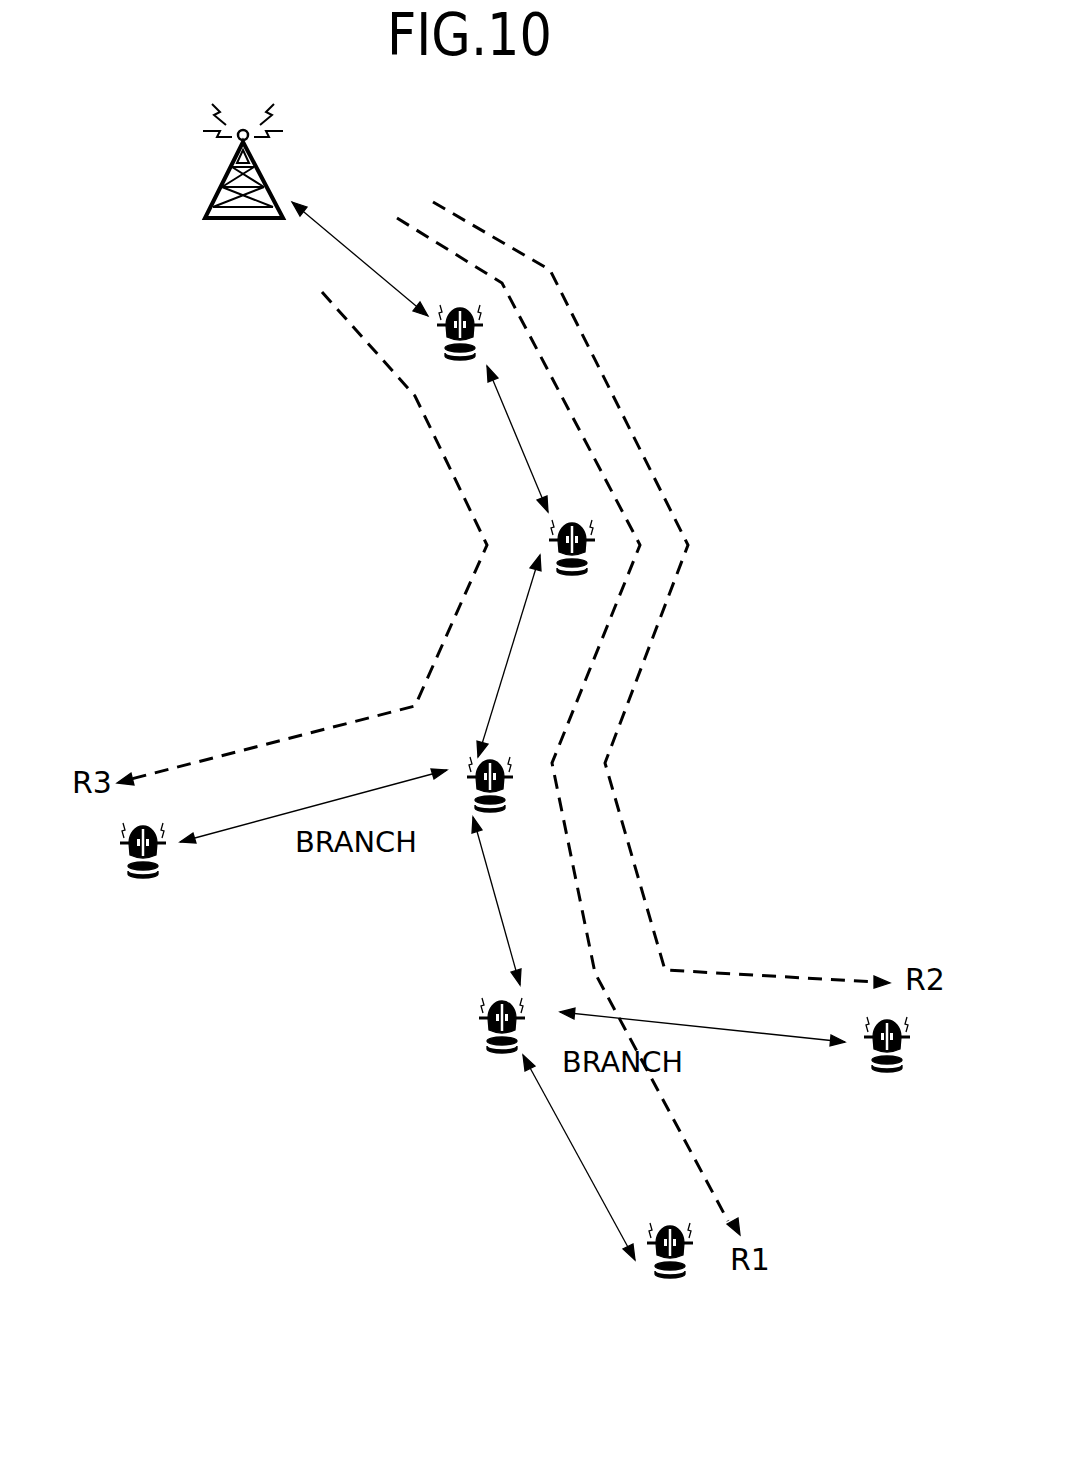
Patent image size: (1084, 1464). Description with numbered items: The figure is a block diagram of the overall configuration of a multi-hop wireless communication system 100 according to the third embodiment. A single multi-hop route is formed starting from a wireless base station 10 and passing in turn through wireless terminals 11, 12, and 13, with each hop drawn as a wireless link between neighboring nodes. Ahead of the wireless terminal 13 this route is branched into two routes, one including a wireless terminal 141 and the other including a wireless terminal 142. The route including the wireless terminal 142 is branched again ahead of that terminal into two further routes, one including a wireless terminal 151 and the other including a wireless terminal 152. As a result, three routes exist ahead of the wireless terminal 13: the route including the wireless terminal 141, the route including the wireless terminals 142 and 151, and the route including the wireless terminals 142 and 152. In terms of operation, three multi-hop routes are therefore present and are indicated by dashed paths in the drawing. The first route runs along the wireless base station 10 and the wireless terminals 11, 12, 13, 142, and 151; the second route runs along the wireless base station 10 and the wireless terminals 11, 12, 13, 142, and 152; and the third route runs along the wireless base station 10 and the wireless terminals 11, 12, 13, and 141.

The wireless base station 10 is at (243, 220).
The wireless terminal 11 is at (459, 358).
The wireless terminal 12 is at (572, 573).
The wireless terminal 13 is at (505, 805).
The multi-hop wireless communication system 100 is at (735, 330).
The wireless terminal 141 is at (143, 876).
The wireless terminal 142 is at (490, 1047).
The wireless terminal 151 is at (670, 1276).
The wireless terminal 152 is at (887, 1070).